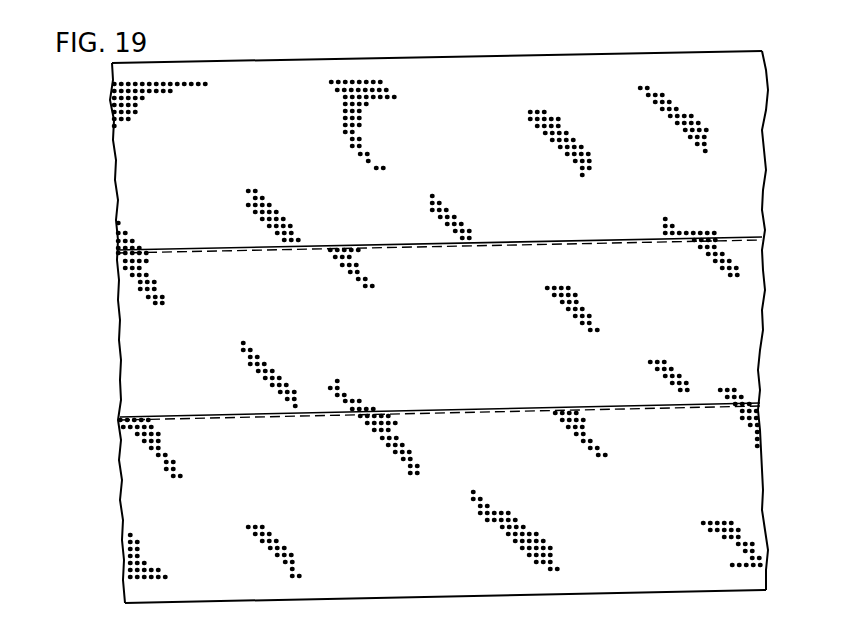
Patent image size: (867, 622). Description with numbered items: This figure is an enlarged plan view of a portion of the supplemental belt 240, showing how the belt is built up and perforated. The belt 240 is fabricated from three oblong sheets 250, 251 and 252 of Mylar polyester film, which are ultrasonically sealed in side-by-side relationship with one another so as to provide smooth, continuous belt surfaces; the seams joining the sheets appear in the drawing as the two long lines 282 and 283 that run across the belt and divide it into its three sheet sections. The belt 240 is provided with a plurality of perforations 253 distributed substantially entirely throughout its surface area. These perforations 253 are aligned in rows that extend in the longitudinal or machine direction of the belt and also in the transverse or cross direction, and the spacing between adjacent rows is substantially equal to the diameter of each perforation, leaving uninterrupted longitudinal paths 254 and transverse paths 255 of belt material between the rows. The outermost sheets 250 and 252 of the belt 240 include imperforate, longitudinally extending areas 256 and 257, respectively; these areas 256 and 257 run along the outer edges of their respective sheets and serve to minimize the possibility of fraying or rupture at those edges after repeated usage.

The supplemental belt 240 is at (440, 313).
The first oblong sheet 250 is at (401, 149).
The second oblong sheet 251 is at (131, 344).
The third oblong sheet 252 is at (135, 508).
The perforations 253 is at (374, 81).
The longitudinal paths 254 is at (392, 90).
The transverse paths 255 is at (351, 81).
The imperforate area 256 is at (745, 57).
The imperforate area 257 is at (752, 578).
The first fold/separation line 282 is at (740, 236).
The second fold/separation line 283 is at (745, 403).